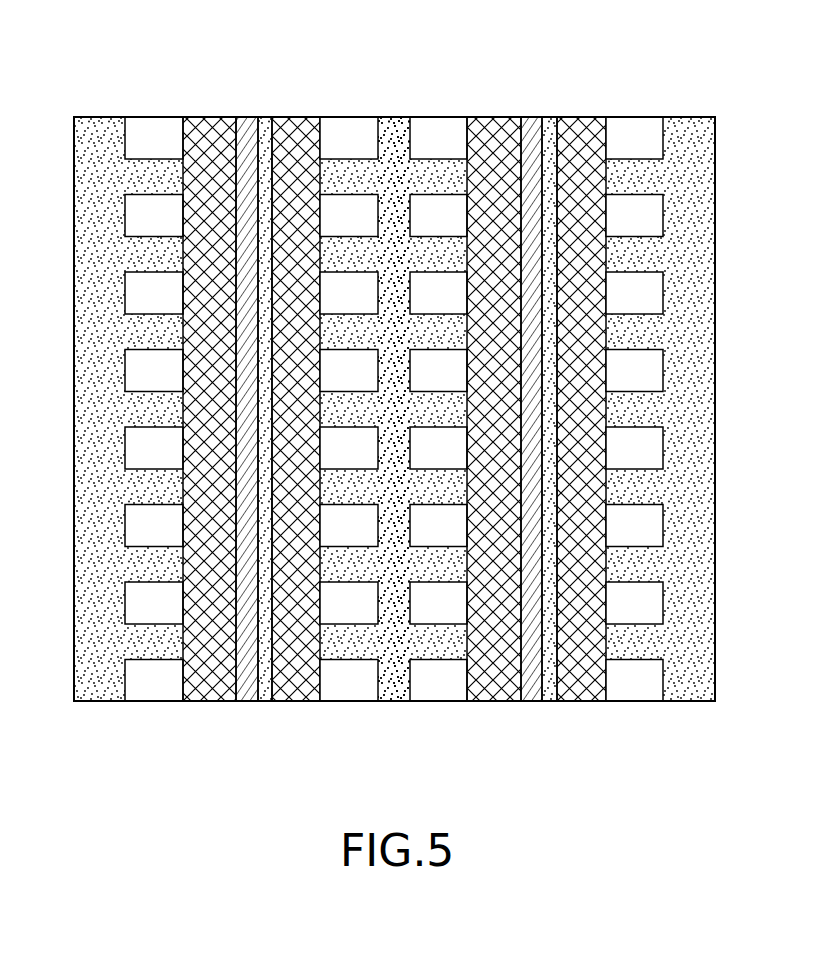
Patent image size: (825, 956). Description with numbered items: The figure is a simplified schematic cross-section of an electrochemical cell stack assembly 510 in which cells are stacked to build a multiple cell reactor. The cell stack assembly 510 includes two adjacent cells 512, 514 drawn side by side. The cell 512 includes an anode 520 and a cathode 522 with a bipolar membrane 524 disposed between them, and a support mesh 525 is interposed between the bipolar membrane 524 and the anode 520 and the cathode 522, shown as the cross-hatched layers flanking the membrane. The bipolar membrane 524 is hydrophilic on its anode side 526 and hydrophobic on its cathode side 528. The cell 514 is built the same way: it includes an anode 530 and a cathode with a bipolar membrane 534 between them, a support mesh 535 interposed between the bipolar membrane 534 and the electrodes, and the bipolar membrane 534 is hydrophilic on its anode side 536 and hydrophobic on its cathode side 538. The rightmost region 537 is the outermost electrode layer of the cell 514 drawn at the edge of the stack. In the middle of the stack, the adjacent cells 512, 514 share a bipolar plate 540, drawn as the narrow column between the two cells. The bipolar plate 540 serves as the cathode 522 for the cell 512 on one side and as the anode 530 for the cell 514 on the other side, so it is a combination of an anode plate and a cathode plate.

The electrochemical cell stack assembly 510 is at (728, 103).
The cell 512 is at (226, 407).
The cell 514 is at (554, 407).
The anode 520 is at (93, 105).
The cathode 522 is at (378, 100).
The bipolar membrane 524 is at (255, 355).
The support mesh 525 is at (251, 379).
The anode side 526 is at (247, 117).
The cathode side 528 is at (265, 117).
The anode 530 is at (410, 100).
The bipolar membrane 534 is at (539, 357).
The support mesh 535 is at (537, 382).
The anode side 536 is at (532, 117).
The dielectric region 537 is at (665, 103).
The cathode side 538 is at (550, 117).
The bipolar plate 540 is at (393, 702).